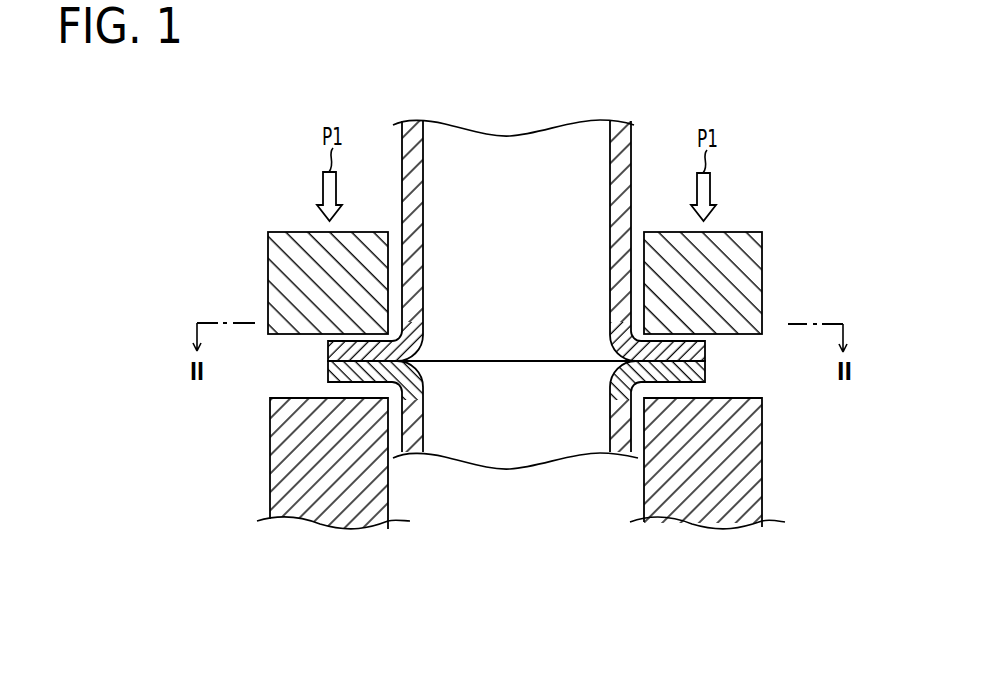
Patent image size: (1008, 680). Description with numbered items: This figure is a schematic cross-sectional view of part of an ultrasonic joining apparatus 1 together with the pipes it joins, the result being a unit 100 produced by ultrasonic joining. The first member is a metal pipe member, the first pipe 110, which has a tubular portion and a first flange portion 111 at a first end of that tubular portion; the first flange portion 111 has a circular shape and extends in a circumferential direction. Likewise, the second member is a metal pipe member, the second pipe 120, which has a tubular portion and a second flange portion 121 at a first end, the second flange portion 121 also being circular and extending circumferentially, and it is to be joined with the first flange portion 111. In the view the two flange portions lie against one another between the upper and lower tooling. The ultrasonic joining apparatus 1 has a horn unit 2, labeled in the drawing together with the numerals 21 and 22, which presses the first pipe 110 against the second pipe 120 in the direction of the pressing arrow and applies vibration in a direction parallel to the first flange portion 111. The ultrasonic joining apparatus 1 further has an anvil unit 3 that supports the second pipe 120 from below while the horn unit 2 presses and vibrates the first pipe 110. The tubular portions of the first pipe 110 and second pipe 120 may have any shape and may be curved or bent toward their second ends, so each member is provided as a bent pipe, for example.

The ultrasonic joining apparatus 1 is at (281, 158).
The horn unit 2 is at (514, 249).
The first upper die 21 is at (527, 249).
The second upper die 22 is at (278, 233).
The anvil unit 3 is at (283, 468).
The unit 100 is at (502, 120).
The first pipe 110 is at (567, 224).
The first flange portion 111 is at (703, 351).
The second pipe 120 is at (567, 446).
The second flange portion 121 is at (695, 375).